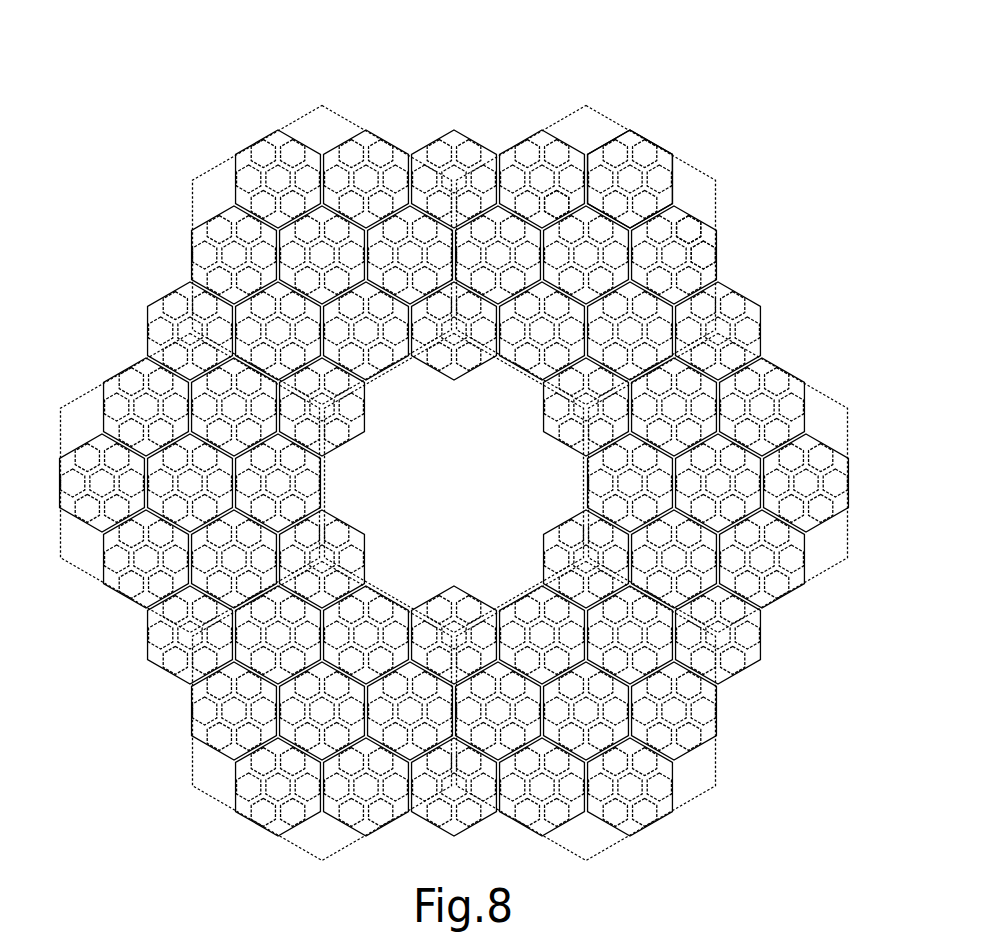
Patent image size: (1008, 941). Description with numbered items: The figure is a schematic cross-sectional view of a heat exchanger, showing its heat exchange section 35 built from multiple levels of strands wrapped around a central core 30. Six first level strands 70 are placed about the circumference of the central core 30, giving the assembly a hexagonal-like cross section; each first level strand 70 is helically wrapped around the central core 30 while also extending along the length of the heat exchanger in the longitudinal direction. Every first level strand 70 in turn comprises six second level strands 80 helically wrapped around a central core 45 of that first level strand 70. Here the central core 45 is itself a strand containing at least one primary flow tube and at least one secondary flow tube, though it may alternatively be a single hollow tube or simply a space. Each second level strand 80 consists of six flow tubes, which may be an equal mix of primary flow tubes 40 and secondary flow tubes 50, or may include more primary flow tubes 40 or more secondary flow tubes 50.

The central core 30 is at (513, 478).
The heat exchange section 35 is at (823, 572).
The primary flow tube 40 is at (689, 228).
The central core of first level strand 45 is at (568, 215).
The secondary flow tube 50 is at (704, 256).
The first level strand 70 is at (175, 305).
The second level strand 80 is at (597, 148).